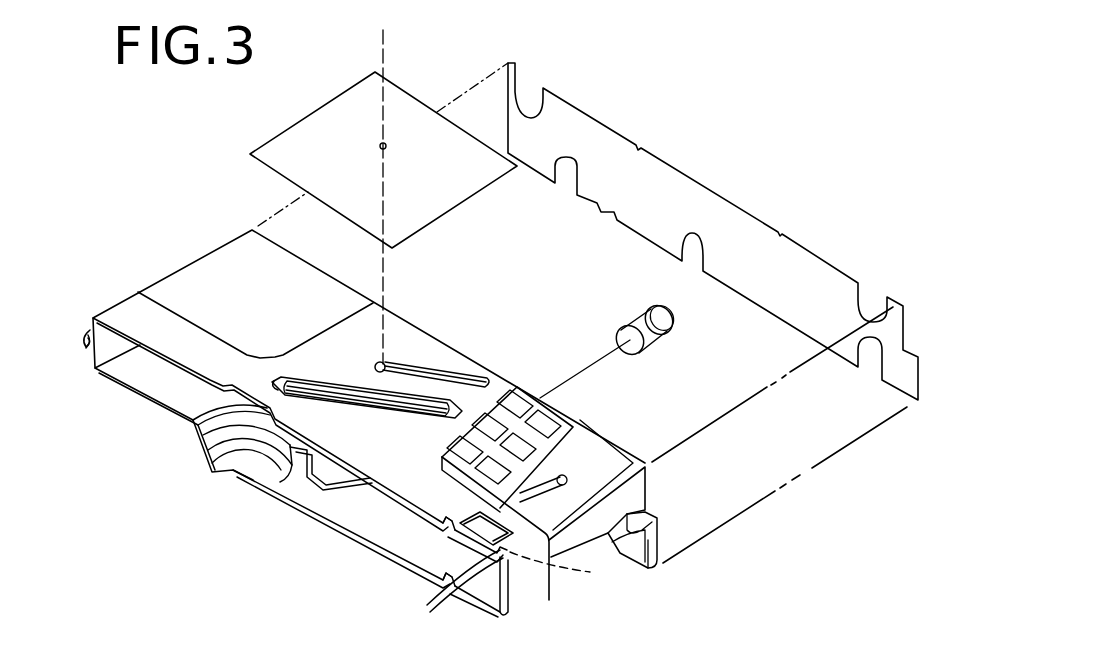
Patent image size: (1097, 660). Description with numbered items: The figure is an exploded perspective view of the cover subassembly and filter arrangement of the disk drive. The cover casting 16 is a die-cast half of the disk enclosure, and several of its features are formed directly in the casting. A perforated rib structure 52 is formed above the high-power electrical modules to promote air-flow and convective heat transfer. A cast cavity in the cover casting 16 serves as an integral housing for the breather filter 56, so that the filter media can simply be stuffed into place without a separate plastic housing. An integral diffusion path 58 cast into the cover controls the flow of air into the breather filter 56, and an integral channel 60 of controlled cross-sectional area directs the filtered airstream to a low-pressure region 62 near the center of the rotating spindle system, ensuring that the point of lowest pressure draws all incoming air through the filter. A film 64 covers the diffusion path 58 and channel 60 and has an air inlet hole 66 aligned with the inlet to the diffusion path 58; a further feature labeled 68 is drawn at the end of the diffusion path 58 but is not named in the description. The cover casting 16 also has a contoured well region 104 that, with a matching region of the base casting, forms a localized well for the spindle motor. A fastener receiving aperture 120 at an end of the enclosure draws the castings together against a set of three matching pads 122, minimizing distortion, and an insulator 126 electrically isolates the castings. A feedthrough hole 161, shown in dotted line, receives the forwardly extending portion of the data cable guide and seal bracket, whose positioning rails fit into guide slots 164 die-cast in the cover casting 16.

The cover casting 16 is at (555, 600).
The perforated rib structure 52 is at (439, 388).
The breather filter 56 is at (653, 343).
The integral diffusion path 58 is at (414, 372).
The integral channel 60 is at (342, 395).
The low-pressure region 62 is at (280, 380).
The film 64 is at (278, 135).
The air inlet hole 66 is at (380, 143).
The pin head 68 is at (386, 362).
The well region 104 is at (265, 471).
The fastener receiving aperture 120 is at (512, 610).
The matching pads 122 is at (86, 338).
The insulator 126 is at (571, 102).
The feedthrough hole 161 is at (570, 568).
The guide slots 164 is at (566, 476).